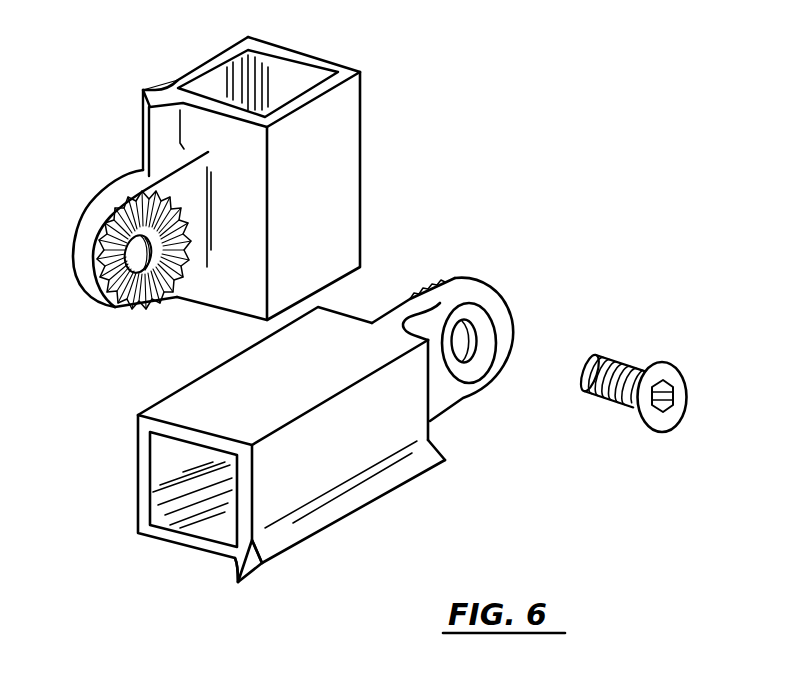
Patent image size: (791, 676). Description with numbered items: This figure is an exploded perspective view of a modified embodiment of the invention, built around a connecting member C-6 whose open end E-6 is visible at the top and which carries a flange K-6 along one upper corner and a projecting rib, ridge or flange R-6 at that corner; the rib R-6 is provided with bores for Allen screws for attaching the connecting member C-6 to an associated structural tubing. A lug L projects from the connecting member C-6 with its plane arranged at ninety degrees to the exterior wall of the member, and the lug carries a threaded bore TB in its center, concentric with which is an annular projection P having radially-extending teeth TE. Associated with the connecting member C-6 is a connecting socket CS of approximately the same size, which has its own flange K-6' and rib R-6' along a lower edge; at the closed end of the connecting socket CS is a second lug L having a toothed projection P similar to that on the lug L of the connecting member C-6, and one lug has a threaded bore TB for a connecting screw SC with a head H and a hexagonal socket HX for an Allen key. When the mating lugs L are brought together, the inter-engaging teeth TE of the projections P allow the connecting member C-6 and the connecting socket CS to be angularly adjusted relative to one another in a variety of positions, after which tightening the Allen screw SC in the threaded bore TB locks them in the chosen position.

The connecting member C-6 is at (348, 65).
The end opening of connector body E-6 is at (280, 65).
The flange of connector body K-6 is at (154, 103).
The projecting rib, ridge or flange R-6 is at (129, 101).
The lug L is at (85, 230).
The annular projection P is at (170, 196).
The radially-extending teeth TE is at (135, 308).
The threaded bore TB is at (167, 292).
The connecting socket CS is at (155, 407).
The flange of connecting sleeve K-6' is at (200, 580).
The rib of connecting sleeve R-6' is at (288, 574).
The connecting screw SC is at (602, 398).
The hexagonal socket of screw head HX is at (670, 395).
The head H is at (662, 425).